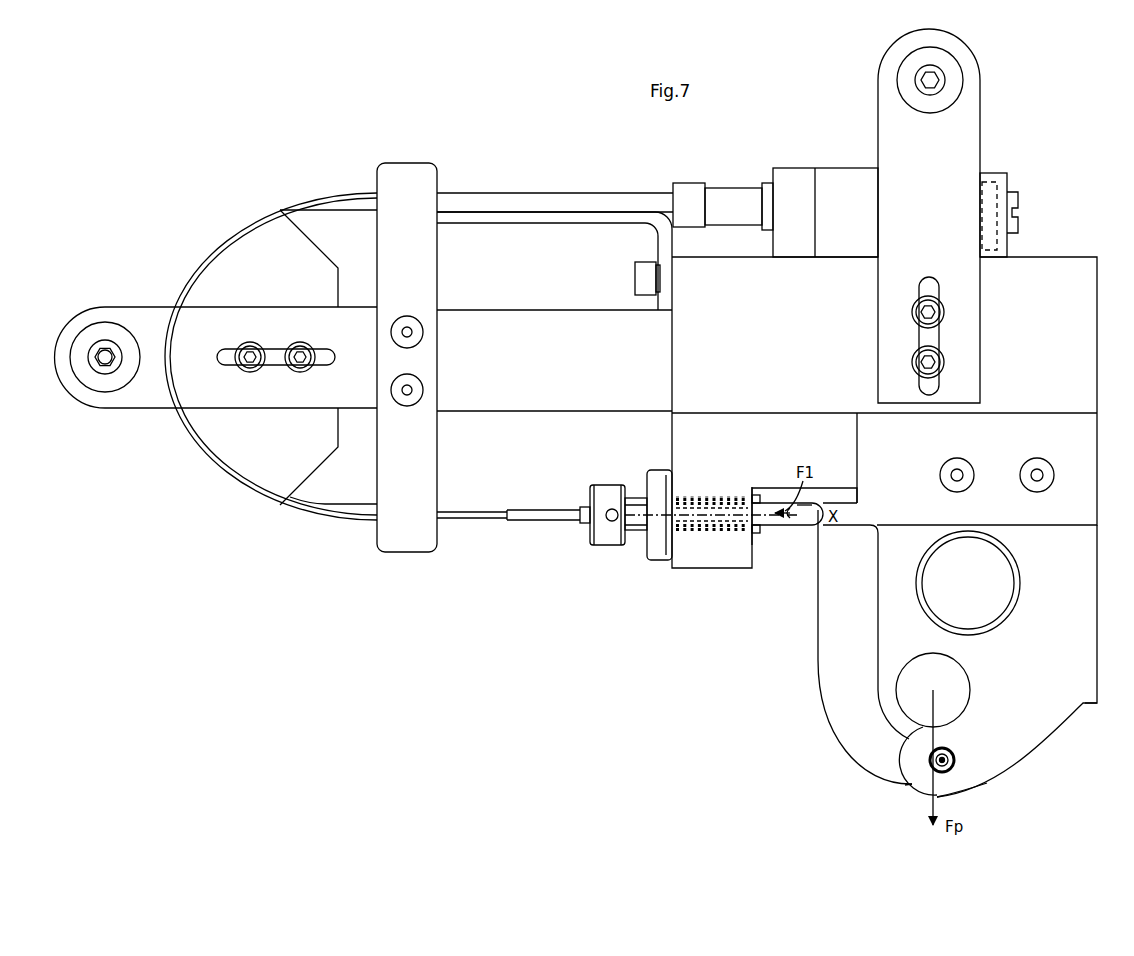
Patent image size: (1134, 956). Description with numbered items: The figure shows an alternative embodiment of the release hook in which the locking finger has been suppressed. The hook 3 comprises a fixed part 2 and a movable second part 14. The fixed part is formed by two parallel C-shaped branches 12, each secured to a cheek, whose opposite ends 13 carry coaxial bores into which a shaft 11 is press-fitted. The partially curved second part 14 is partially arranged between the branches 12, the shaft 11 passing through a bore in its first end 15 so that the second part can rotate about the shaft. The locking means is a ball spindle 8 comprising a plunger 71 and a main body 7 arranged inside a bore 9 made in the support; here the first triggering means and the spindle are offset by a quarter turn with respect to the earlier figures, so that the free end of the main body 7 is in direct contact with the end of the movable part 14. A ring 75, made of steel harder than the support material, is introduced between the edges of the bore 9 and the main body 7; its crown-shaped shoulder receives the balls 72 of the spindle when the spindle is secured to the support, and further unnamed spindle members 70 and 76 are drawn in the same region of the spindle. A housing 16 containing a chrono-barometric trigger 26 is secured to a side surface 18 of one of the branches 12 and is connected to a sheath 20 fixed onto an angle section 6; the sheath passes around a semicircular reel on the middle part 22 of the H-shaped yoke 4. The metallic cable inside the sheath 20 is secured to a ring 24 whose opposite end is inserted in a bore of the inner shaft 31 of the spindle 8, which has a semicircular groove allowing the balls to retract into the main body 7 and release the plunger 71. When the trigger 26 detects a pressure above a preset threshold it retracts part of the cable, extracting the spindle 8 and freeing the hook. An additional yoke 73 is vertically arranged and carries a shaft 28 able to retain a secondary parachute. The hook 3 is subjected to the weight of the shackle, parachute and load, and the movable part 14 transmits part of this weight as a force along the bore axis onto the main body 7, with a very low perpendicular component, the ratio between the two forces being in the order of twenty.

The fixed part of the hook 2 is at (1018, 745).
The hook 3 is at (858, 773).
The H-shaped yoke 4 is at (142, 390).
The angle section 6 is at (467, 217).
The main body of the ball spindle 7 is at (700, 530).
The ball spindle 8 is at (612, 535).
The bore 9 is at (710, 530).
The shaft 11 is at (927, 763).
The C-shaped branches 12 is at (1067, 713).
The ends of the branches 13 is at (945, 785).
The second part of the hook 14 is at (832, 661).
The first end of the second part 15 is at (907, 785).
The housing 16 is at (838, 190).
The side surface 18 is at (968, 625).
The sheath 20 is at (538, 203).
The middle part of the yoke 22 is at (276, 325).
The ring 24 is at (532, 518).
The chrono-barometric trigger 26 is at (988, 190).
The shaft 28 is at (893, 78).
The inner shaft of the ball spindle 31 is at (587, 500).
The piston 70 is at (728, 531).
The plunger 71 is at (797, 506).
The balls 72 is at (756, 534).
The additional yoke 73 is at (975, 76).
The ring 75 is at (719, 500).
The seal 76 is at (753, 496).